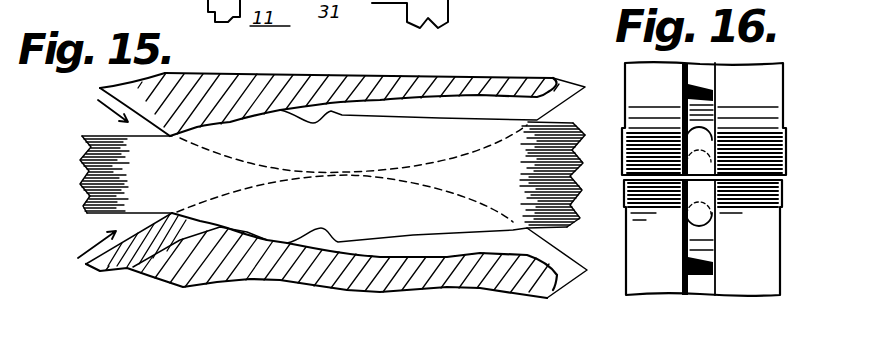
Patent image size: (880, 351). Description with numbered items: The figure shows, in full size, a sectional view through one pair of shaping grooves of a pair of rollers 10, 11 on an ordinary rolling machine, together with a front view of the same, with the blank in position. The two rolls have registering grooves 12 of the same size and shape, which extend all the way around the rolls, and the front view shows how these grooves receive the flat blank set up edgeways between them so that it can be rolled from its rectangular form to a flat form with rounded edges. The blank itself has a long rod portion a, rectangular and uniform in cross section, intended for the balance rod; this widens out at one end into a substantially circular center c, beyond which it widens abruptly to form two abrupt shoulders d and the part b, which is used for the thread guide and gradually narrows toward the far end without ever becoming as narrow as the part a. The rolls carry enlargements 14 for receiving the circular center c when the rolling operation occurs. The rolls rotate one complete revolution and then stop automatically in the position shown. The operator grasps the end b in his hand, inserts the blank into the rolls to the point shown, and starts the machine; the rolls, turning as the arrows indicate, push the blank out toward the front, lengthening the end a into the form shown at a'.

In FIG. 15, the roller 10 is at (277, 75).
In FIG. 16, the roller 10 is at (779, 140).
In FIG. 15, the roller 11 is at (267, 280).
In FIG. 16, the roller 11 is at (780, 237).
In FIG. 15, the registering grooves 12 is at (173, 110).
In FIG. 16, the registering grooves 12 is at (684, 85).
In FIG. 15, the enlargement 14 is at (437, 108).
In FIG. 16, the enlargement 14 is at (700, 113).
In FIG. 15, the balance rod part of blank a is at (109, 174).
In FIG. 16, the lengthened blank end a' is at (671, 228).
In FIG. 15, the thread guide part of blank b is at (552, 175).
In FIG. 15, the circular center c is at (352, 173).
In FIG. 15, the abrupt shoulders d is at (336, 117).